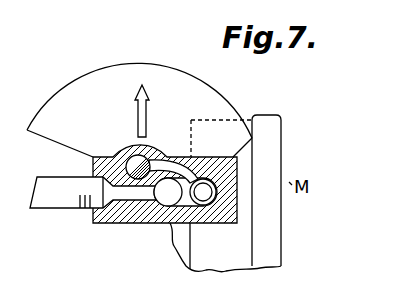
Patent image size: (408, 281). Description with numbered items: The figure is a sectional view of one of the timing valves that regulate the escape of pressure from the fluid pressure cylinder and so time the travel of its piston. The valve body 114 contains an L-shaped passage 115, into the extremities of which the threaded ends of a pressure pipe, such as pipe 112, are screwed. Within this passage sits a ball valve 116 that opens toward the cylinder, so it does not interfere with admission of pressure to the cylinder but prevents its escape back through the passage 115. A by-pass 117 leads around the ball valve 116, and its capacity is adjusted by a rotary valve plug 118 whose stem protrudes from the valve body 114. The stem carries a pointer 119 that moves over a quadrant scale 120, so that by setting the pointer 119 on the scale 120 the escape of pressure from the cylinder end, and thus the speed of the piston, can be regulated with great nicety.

The pipe 112 is at (171, 241).
The timing valve body 114 is at (153, 223).
The L-shaped passage 115 is at (125, 223).
The ball valve 116 is at (185, 192).
The by-pass 117 is at (174, 160).
The rotary valve plug 118 is at (136, 156).
The pointer 119 is at (138, 115).
The quadrant scale 120 is at (222, 97).